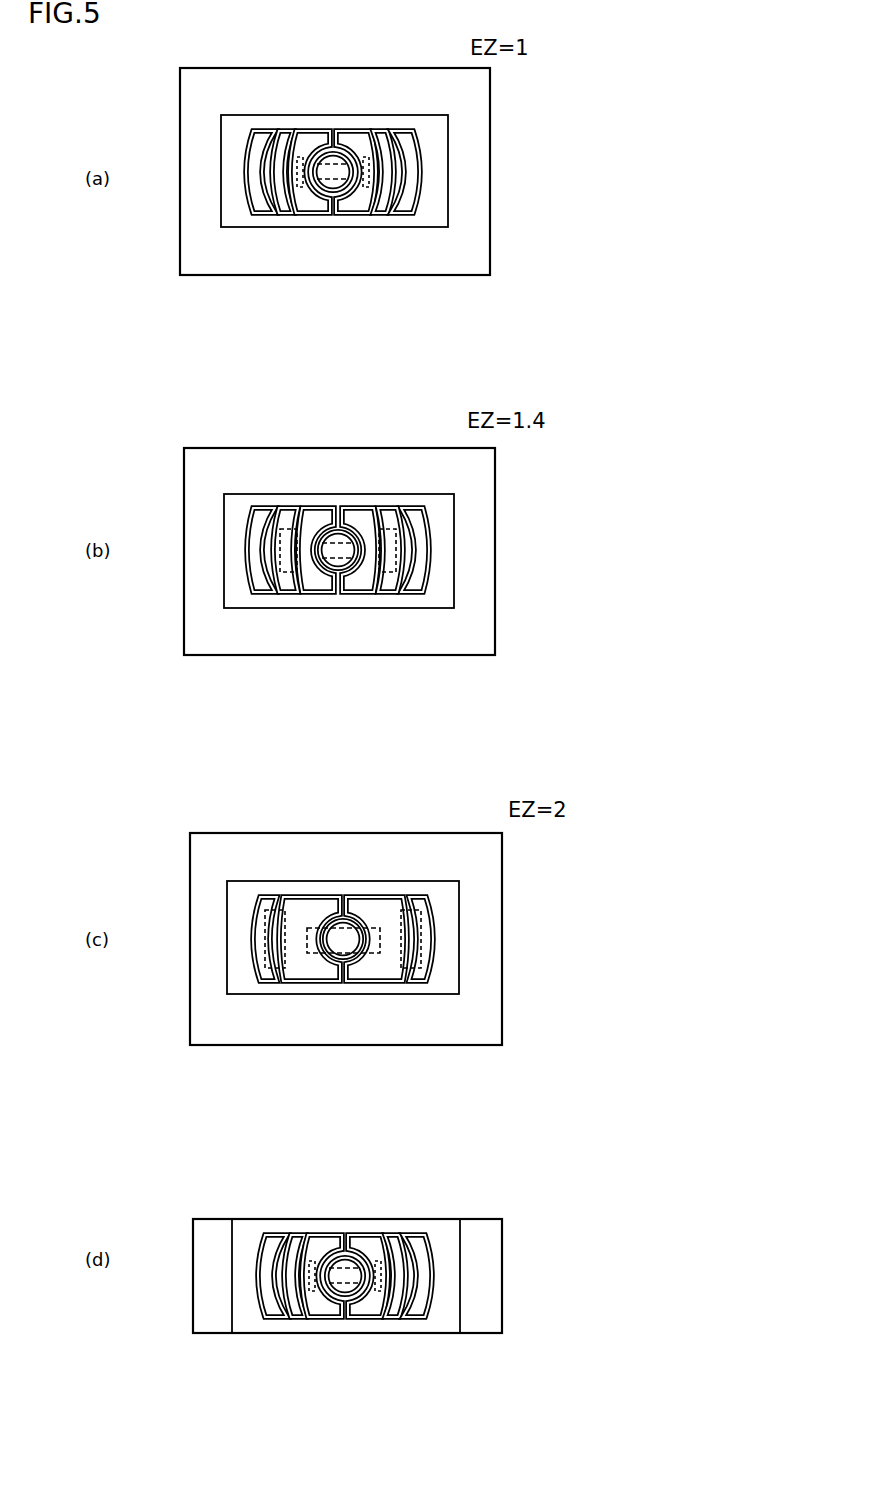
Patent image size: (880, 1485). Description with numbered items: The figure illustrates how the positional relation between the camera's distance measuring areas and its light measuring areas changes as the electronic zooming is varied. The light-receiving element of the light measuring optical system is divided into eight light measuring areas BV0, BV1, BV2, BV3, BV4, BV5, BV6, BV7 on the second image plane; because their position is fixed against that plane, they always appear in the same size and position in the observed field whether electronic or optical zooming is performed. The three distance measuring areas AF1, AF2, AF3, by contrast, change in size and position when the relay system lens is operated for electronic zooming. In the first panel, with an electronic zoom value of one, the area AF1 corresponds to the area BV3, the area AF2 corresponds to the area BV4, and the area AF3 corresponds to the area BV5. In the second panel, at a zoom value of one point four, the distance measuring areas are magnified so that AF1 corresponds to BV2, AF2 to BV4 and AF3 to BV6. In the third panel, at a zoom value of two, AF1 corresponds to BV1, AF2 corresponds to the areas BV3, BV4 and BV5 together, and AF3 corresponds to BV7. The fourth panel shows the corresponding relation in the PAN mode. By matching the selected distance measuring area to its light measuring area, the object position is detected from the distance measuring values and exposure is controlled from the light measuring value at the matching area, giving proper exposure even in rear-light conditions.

The light measuring area BV0 is at (237, 135).
The light measuring area BV1 is at (258, 143).
The light measuring area BV2 is at (287, 147).
The light measuring area BV3 is at (320, 147).
The light measuring area BV4 is at (329, 152).
The light measuring area BV5 is at (347, 147).
The light measuring area BV6 is at (382, 143).
The light measuring area BV7 is at (407, 147).
The distance measuring area AF1 is at (302, 182).
The distance measuring area AF2 is at (330, 173).
The distance measuring area AF3 is at (365, 183).